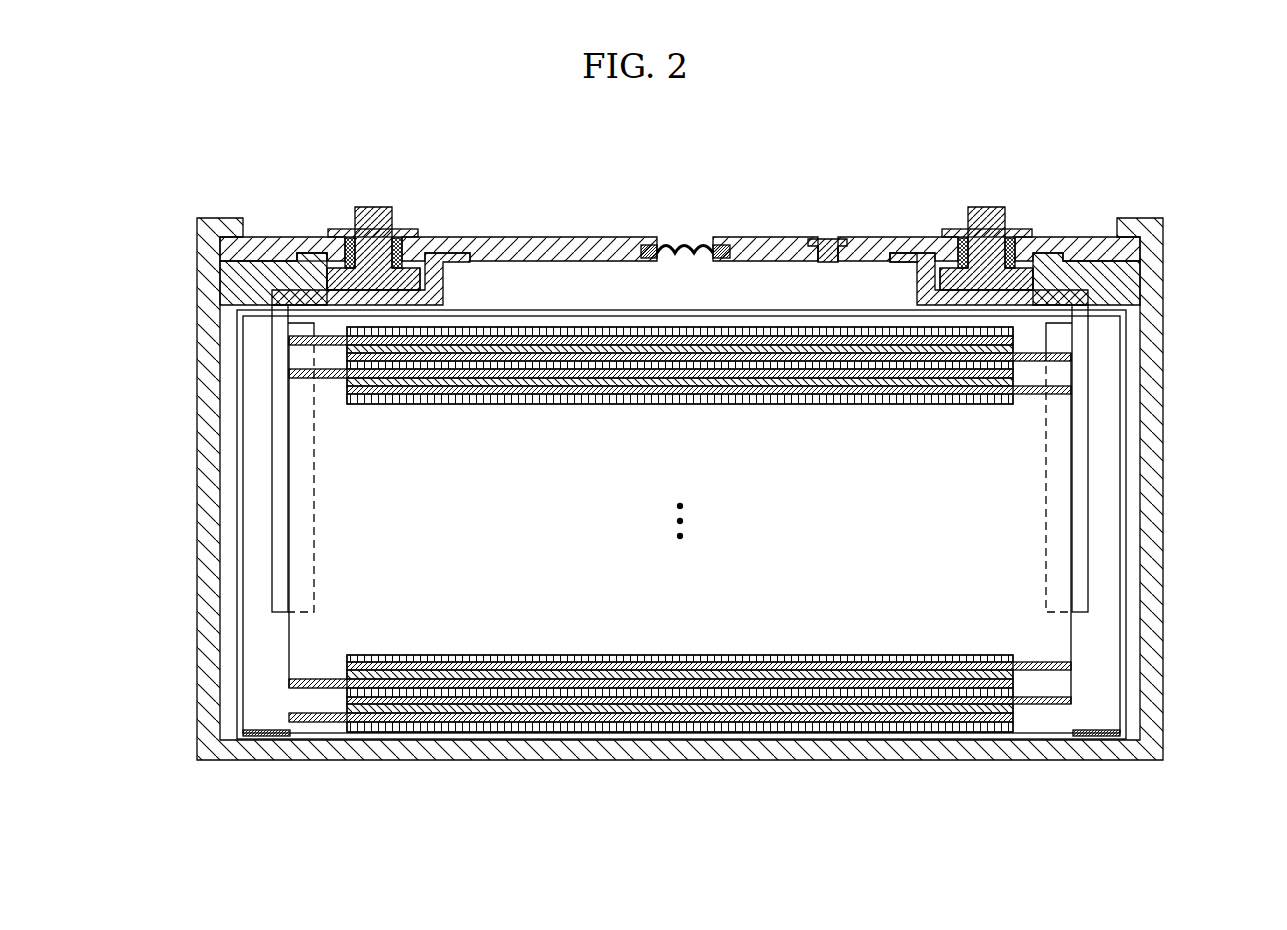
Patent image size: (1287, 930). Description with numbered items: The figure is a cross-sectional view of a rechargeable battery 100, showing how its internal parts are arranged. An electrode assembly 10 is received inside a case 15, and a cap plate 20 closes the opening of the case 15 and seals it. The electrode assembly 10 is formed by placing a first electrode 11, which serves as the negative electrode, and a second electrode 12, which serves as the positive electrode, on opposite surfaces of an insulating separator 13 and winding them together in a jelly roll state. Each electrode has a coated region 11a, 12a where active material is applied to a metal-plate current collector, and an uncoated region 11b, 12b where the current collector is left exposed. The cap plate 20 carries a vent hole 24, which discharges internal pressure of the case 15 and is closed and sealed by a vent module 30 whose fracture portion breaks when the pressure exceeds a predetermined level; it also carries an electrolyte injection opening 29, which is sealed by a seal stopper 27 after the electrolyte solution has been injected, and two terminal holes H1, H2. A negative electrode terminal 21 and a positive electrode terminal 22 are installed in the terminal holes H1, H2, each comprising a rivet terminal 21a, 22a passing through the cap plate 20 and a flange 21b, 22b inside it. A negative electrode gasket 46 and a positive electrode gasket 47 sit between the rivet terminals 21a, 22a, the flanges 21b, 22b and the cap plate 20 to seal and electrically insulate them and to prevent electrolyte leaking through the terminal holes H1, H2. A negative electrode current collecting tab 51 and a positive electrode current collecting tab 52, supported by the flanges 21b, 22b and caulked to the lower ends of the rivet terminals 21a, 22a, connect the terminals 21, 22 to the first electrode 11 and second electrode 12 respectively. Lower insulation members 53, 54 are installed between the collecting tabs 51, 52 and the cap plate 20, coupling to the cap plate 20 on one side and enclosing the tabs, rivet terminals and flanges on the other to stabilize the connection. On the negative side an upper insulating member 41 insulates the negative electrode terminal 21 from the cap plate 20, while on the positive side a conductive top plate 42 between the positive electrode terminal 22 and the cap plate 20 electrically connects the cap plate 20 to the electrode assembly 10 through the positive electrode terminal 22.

The rechargeable battery 100 is at (621, 147).
The electrode assembly 10 is at (818, 737).
The first electrode 11 is at (305, 822).
The coated region 11a is at (437, 719).
The uncoated region 11b is at (318, 724).
The second electrode 12 is at (915, 822).
The coated region 12a is at (930, 705).
The uncoated region 12b is at (1055, 705).
The separator 13 is at (697, 727).
The case 15 is at (1165, 480).
The cap plate 20 is at (769, 244).
The negative electrode terminal 21 is at (386, 205).
The rivet terminal 21a is at (376, 291).
The flange 21b is at (414, 288).
The positive electrode terminal 22 is at (984, 205).
The rivet terminal 22a is at (1000, 282).
The flange 22b is at (961, 290).
The vent hole 24 is at (656, 244).
The seal stopper 27 is at (836, 244).
The electrolyte injection opening 29 is at (826, 240).
The vent module 30 is at (680, 236).
The upper insulating member 41 is at (328, 231).
The top plate 42 is at (1030, 232).
The negative electrode gasket 46 is at (300, 256).
The positive electrode gasket 47 is at (930, 256).
The negative electrode current collecting tab 51 is at (268, 457).
The positive electrode current collecting tab 52 is at (1094, 573).
The lower insulation member 53 is at (234, 287).
The lower insulation member 54 is at (1128, 291).
The terminal hole H1 is at (372, 252).
The terminal hole H2 is at (991, 254).